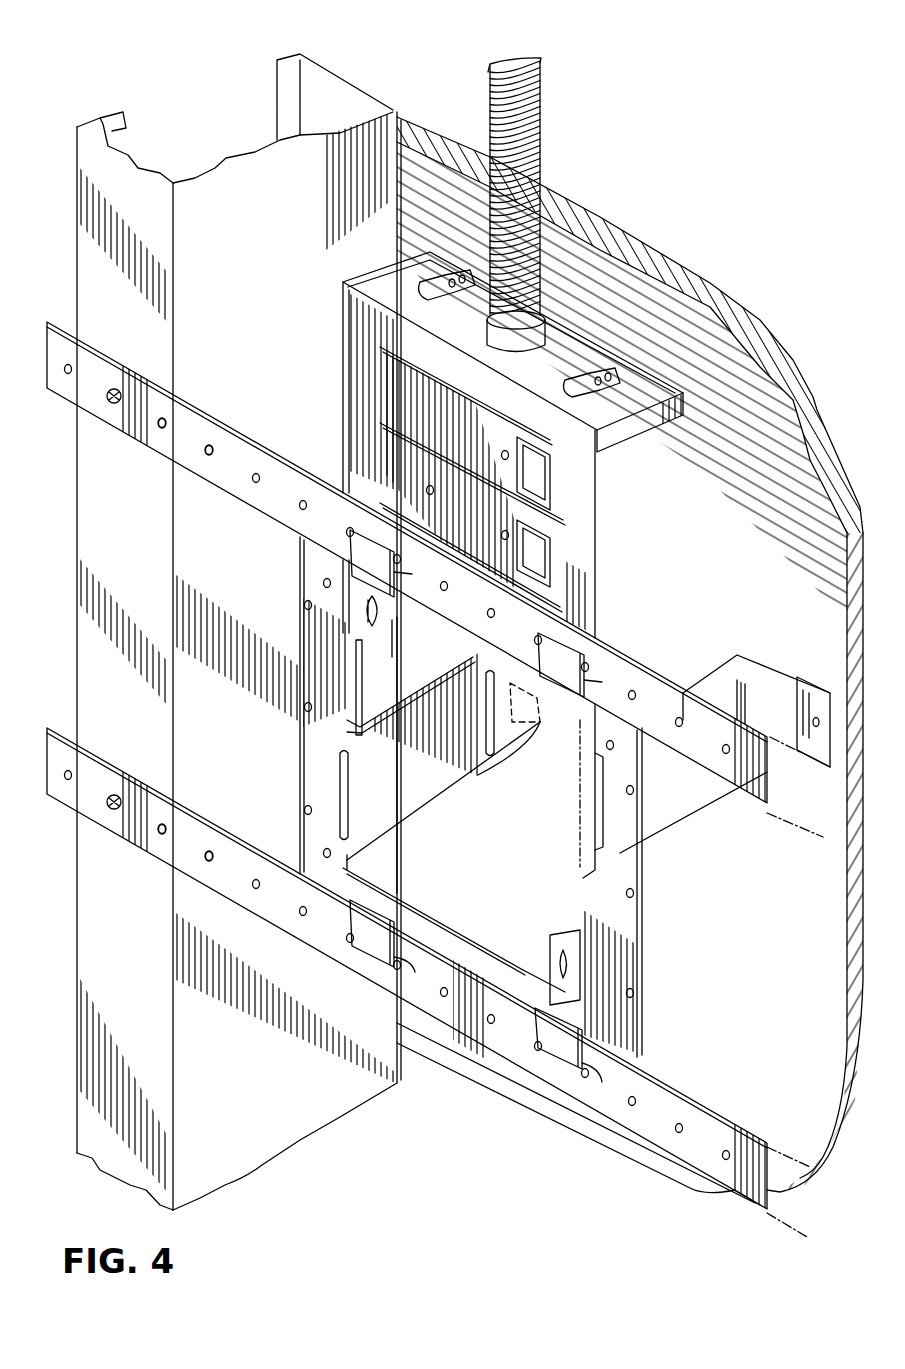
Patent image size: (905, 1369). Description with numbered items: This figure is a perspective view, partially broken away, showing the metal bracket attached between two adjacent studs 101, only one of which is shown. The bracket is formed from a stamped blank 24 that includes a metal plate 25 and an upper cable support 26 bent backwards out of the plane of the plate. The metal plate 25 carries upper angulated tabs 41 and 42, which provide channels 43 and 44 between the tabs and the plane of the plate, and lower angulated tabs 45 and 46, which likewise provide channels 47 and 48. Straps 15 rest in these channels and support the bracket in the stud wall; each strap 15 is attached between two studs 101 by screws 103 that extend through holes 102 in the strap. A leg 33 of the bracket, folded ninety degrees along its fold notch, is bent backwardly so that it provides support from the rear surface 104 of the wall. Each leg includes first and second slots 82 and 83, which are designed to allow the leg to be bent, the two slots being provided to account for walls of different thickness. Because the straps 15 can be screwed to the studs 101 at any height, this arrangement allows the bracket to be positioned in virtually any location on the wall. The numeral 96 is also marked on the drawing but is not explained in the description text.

The stud 101 is at (278, 299).
The hole 102 is at (166, 420).
The screw 103 is at (110, 388).
The strap 15 is at (259, 437).
The cable support 26 is at (478, 337).
The rear surface 104 is at (704, 559).
The stamped blank 24 is at (684, 906).
The metal plate 25 is at (630, 868).
The upper angulated tab 41 is at (372, 563).
The upper angulated tab 42 is at (561, 665).
The channel 43 is at (415, 576).
The channel 44 is at (605, 683).
The lower angulated tab 45 is at (372, 933).
The lower angulated tab 46 is at (558, 1038).
The channel 47 is at (410, 976).
The channel 48 is at (600, 1083).
The first slot 82 is at (543, 700).
The second slot 83 is at (745, 688).
The aperture 96 is at (817, 727).
The leg 33 is at (699, 802).